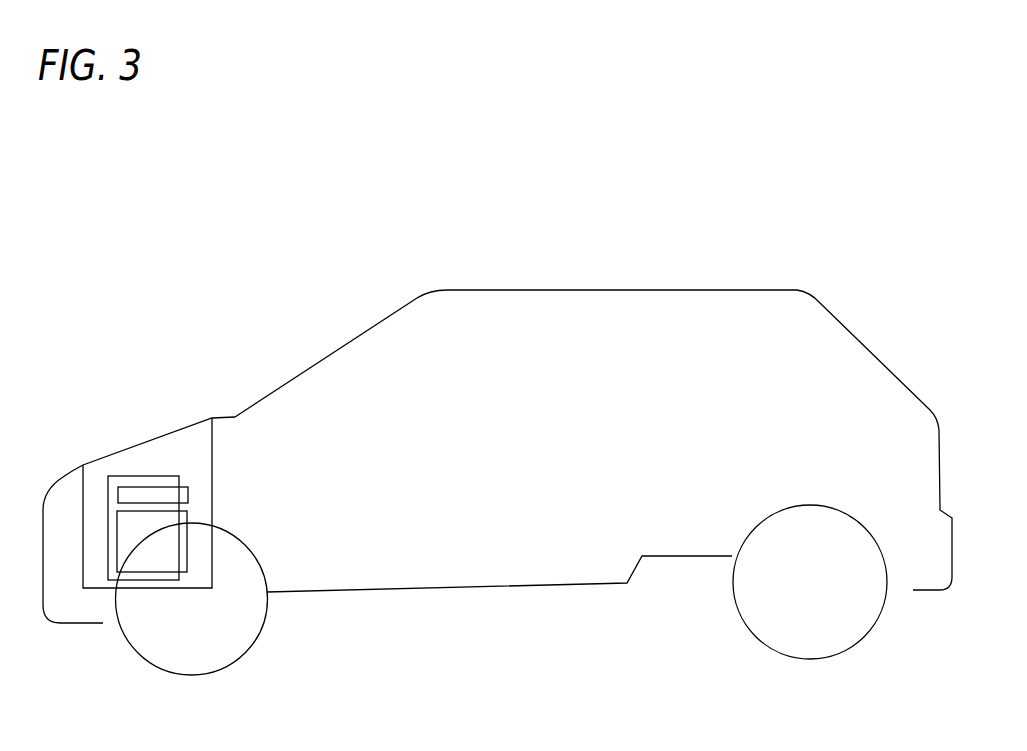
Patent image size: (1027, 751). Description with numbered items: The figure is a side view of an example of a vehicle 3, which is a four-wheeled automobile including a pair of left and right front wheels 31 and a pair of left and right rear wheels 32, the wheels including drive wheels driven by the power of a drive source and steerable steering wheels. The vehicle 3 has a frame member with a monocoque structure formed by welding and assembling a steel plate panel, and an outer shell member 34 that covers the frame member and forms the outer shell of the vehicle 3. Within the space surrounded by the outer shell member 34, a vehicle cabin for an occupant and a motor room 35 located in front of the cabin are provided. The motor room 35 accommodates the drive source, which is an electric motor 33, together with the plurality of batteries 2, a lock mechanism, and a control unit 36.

The vehicle 3 is at (577, 220).
The batteries 2 is at (118, 476).
The front wheels 31 is at (237, 660).
The rear wheels 32 is at (765, 647).
The electric motor 33 is at (188, 549).
The outer shell member 34 is at (367, 328).
The motor room 35 is at (209, 454).
The control unit 36 is at (188, 503).